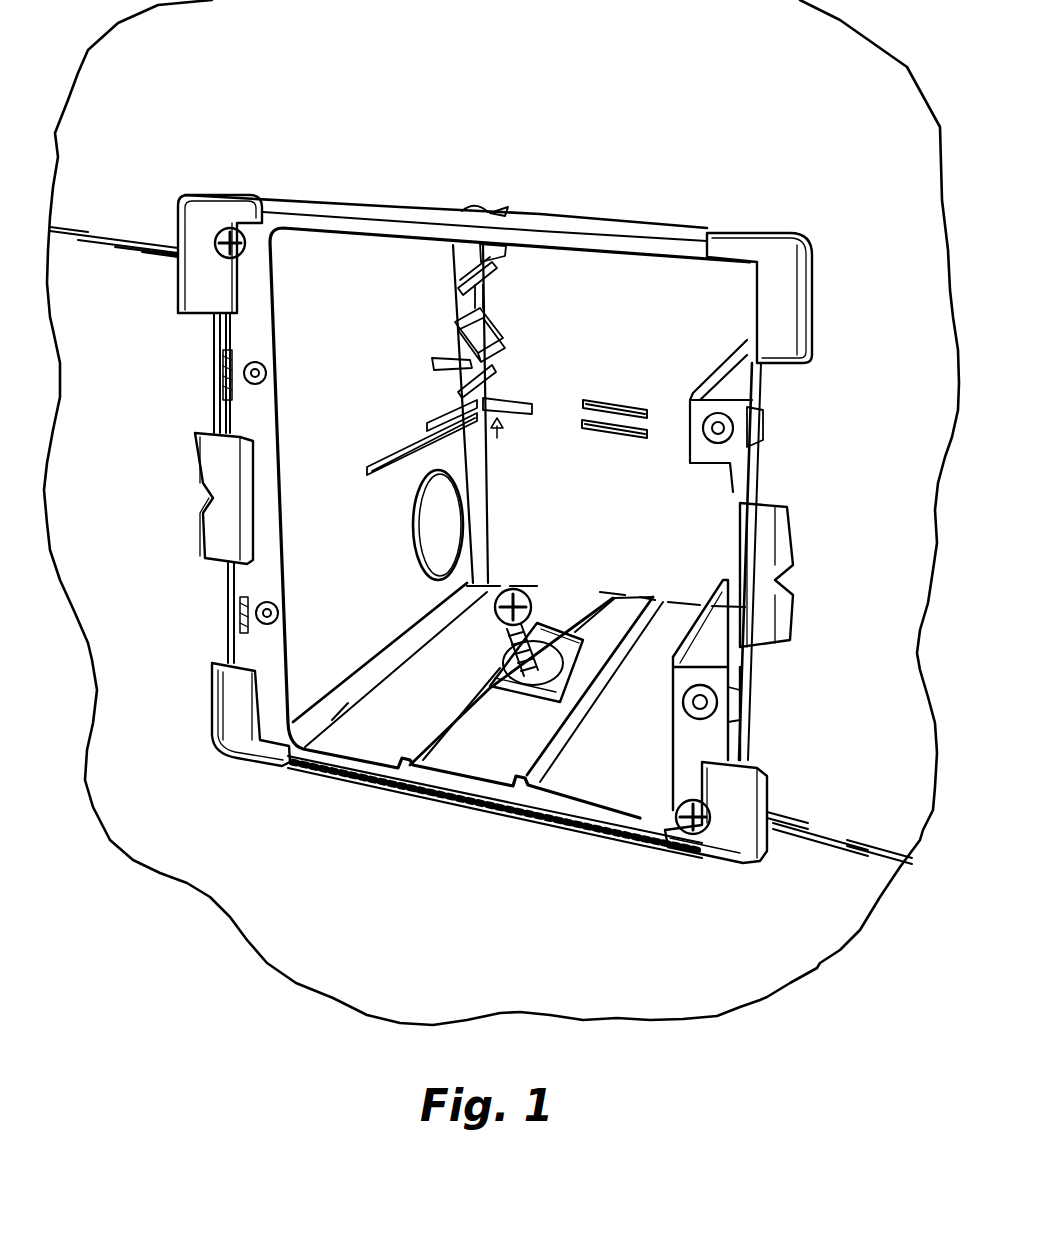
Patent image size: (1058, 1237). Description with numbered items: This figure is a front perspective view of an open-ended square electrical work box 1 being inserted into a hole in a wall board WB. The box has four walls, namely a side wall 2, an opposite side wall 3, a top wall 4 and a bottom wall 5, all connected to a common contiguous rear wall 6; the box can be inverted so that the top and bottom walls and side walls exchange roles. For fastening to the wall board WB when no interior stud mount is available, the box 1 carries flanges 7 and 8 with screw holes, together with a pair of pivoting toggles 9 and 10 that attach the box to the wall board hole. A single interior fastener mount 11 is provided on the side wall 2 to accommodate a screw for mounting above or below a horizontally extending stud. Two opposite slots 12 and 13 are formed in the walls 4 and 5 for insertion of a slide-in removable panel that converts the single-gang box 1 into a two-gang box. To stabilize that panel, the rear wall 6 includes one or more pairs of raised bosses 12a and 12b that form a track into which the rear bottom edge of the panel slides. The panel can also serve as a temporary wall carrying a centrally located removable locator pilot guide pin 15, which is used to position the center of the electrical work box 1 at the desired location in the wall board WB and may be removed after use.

The wall board WB is at (533, 86).
The electrical work box 1 is at (322, 226).
The side wall 2 is at (338, 763).
The opposite side wall 3 is at (607, 237).
The top wall 4 is at (742, 742).
The bottom wall 5 is at (372, 343).
The rear wall 6 is at (637, 318).
The flange 7 is at (770, 537).
The flange 8 is at (213, 468).
The pivoting toggle 9 is at (727, 847).
The pivoting toggle 10 is at (195, 280).
The fastener mount 11 is at (580, 643).
The slot 12 is at (358, 490).
The raised boss 12a is at (630, 358).
The raised boss 12b is at (615, 435).
The slot 13 is at (728, 577).
The removable locator pilot guide pin 15 is at (233, 585).